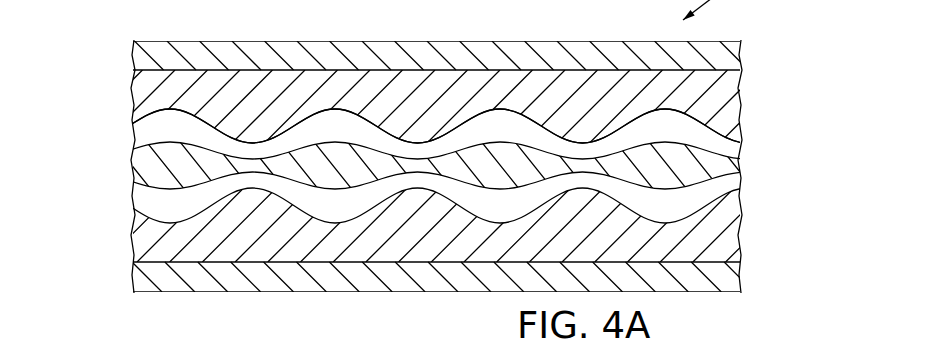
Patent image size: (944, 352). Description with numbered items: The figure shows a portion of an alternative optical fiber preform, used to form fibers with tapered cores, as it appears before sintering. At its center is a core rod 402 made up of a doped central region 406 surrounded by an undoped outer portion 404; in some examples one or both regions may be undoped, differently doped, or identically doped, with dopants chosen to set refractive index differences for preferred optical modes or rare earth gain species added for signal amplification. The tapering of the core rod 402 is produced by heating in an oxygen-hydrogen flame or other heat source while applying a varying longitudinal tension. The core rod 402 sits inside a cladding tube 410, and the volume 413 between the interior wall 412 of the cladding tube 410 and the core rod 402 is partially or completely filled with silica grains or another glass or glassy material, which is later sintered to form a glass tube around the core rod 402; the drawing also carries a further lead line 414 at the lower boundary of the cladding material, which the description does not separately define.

The core rod 402 is at (395, 166).
The undoped outer portion 404 is at (148, 203).
The doped central region 406 is at (148, 164).
The cladding tube 410 is at (723, 59).
The interior wall 412 is at (707, 72).
The volume 413 is at (148, 89).
The lower surface of intermediate layer 414 is at (717, 108).